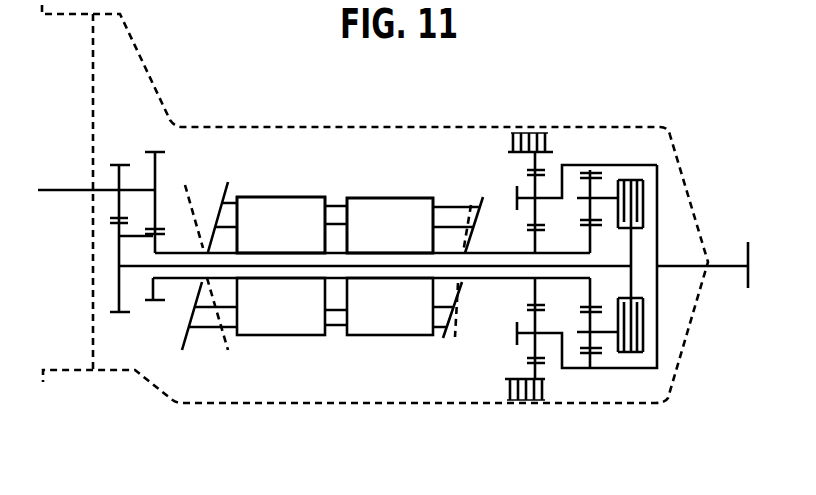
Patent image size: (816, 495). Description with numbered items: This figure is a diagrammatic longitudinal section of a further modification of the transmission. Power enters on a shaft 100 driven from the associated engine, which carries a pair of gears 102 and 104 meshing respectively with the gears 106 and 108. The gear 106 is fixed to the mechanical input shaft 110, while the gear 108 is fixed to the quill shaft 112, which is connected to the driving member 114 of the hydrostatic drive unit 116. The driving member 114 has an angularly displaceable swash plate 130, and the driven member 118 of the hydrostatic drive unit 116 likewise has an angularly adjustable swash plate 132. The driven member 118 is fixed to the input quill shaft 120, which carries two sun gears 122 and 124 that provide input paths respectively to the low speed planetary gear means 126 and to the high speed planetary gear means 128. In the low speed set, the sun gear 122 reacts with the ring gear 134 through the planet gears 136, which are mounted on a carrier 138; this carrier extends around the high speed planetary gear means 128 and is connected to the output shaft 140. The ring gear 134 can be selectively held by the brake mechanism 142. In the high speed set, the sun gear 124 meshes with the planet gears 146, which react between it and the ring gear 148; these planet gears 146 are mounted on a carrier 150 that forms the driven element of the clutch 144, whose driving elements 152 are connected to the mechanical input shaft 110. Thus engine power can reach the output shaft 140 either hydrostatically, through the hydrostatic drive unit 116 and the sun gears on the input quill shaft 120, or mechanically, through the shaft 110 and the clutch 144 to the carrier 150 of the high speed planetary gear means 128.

The shaft 100 is at (50, 190).
The gear 102 is at (116, 174).
The gear 104 is at (152, 166).
The gear 106 is at (114, 234).
The gear 108 is at (152, 238).
The mechanical input shaft 110 is at (333, 263).
The quill shaft 112 is at (174, 248).
The driving member 114 is at (258, 208).
The hydrostatic drive unit 116 is at (360, 150).
The driven member 118 is at (368, 208).
The input quill shaft 120 is at (475, 254).
The sun gear 122 is at (530, 240).
The sun gear 124 is at (588, 228).
The low speed planetary gear means 126 is at (552, 146).
The high speed planetary gear means 128 is at (610, 160).
The swash plate 130 is at (224, 192).
The swash plate 132 is at (480, 198).
The ring gear 134 is at (532, 160).
The planet gears 136 is at (530, 312).
The carrier 138 is at (597, 370).
The output shaft 140 is at (731, 265).
The brake mechanism 142 is at (491, 389).
The clutch 144 is at (655, 188).
The planet gears 146 is at (592, 190).
The ring gear 148 is at (588, 163).
The carrier 150 is at (627, 354).
The driving elements 152 is at (623, 227).